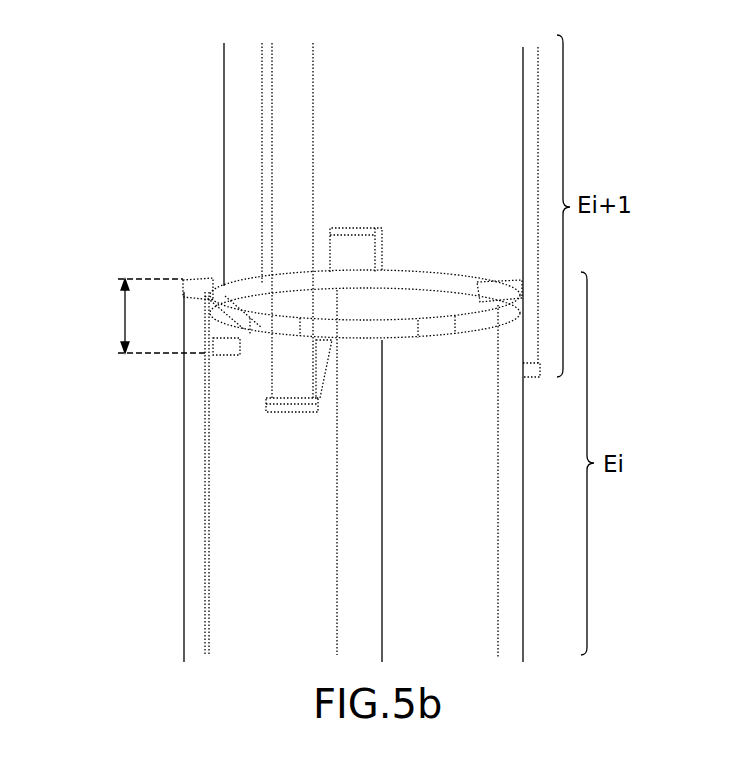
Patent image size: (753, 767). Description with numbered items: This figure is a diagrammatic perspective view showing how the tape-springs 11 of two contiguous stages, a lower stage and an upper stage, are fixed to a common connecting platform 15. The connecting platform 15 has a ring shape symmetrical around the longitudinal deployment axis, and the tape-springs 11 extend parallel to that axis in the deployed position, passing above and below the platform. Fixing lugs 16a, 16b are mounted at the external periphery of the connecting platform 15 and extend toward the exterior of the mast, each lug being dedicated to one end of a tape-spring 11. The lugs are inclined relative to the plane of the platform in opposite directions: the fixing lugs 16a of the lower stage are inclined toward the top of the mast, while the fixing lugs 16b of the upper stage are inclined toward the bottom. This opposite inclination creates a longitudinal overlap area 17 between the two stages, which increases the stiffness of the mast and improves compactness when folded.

The tape-spring 11 is at (238, 200).
The connecting platform 15 is at (405, 283).
The fixing lug 16a is at (498, 282).
The fixing lug 16b is at (317, 372).
The longitudinal overlap area 17 is at (122, 318).